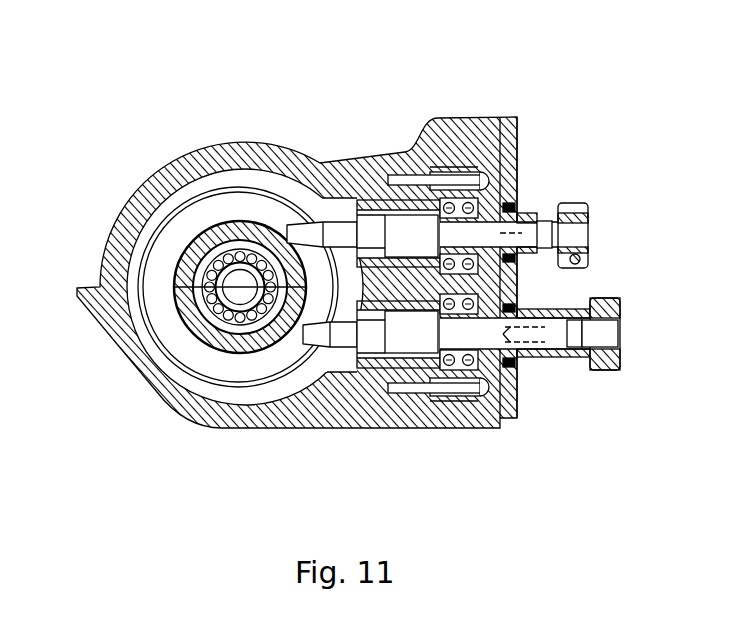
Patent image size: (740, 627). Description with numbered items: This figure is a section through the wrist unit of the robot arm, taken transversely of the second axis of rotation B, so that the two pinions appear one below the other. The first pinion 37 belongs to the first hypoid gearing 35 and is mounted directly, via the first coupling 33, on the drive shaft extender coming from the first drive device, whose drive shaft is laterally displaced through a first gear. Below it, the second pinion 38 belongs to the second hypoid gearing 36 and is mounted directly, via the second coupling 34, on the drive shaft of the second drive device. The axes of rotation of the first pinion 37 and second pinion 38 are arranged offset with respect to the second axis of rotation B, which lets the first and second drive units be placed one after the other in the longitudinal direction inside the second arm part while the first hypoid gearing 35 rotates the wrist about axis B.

The first coupling 33 is at (507, 233).
The second coupling 34 is at (522, 365).
The first hypoid gearing 35 is at (413, 237).
The second hypoid gearing 36 is at (413, 333).
The first pinion 37 is at (345, 233).
The second pinion 38 is at (343, 338).